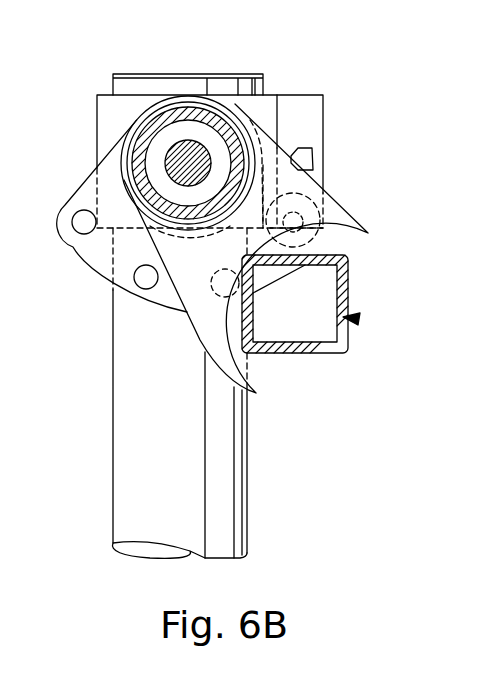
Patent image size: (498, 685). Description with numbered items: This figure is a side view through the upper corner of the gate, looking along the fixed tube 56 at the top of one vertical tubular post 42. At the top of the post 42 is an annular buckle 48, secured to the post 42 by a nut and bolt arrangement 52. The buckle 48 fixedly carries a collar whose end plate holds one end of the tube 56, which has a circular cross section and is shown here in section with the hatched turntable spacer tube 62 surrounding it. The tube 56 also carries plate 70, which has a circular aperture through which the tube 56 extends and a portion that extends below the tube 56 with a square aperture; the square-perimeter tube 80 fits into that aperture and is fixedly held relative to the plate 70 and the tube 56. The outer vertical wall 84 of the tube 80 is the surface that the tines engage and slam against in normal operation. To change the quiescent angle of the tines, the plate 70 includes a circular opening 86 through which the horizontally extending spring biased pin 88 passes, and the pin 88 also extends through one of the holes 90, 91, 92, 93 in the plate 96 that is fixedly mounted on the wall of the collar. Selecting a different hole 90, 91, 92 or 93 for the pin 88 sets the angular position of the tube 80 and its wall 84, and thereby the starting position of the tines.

The tubular post 42 is at (223, 482).
The annular buckle 48 is at (307, 107).
The nut and bolt arrangement 52 is at (305, 155).
The tube 56 is at (187, 157).
The turntable spacer tube 62 is at (210, 117).
The plate 70 is at (377, 303).
The tube 80 is at (358, 319).
The outer vertical wall 84 is at (252, 328).
The circular opening 86 is at (298, 238).
The spring biased pin 88 is at (298, 220).
The hole 90 is at (82, 223).
The hole 91 is at (143, 278).
The hole 92 is at (217, 290).
The hole 93 is at (303, 228).
The plate 96 is at (88, 181).